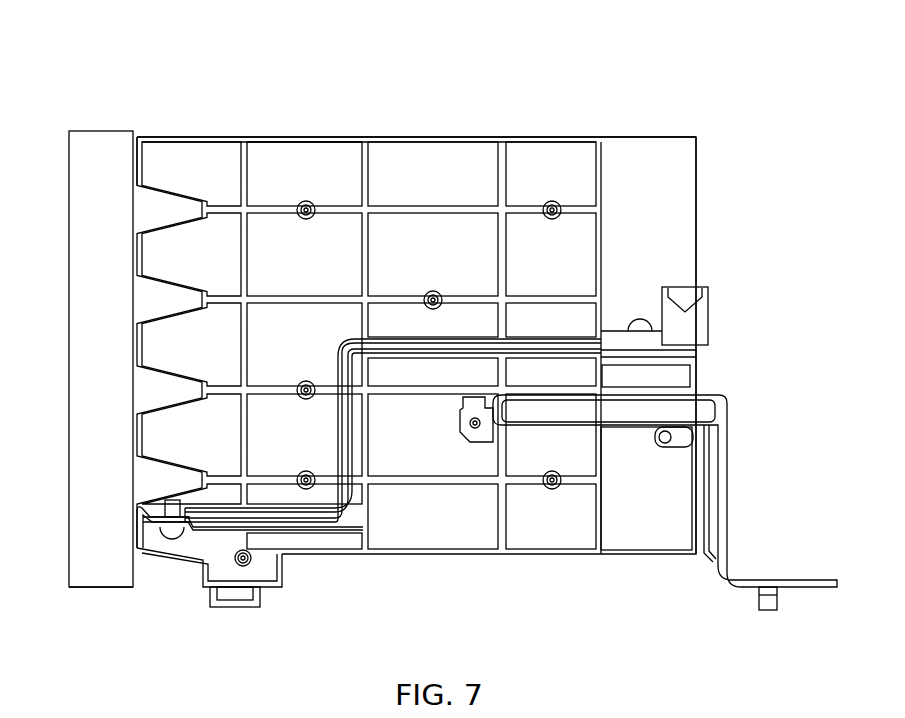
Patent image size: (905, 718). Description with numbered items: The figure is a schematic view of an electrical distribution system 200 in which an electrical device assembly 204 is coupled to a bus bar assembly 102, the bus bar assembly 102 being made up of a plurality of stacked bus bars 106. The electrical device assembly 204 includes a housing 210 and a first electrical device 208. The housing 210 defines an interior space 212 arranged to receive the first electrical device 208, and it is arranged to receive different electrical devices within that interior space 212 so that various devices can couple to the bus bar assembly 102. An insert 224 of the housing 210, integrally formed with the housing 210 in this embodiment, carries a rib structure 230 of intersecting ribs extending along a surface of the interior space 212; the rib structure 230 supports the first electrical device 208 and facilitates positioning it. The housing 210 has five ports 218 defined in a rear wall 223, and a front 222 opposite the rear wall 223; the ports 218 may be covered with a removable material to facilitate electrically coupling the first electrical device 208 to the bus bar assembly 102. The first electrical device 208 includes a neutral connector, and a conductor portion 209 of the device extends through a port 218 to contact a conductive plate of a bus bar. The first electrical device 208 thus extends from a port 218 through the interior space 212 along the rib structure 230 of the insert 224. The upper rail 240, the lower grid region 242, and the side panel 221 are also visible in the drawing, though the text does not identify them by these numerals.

The electrical distribution system 200 is at (660, 50).
The bus bar assembly 102 is at (94, 138).
The stacked bus bars 106 is at (106, 588).
The rear wall 223 is at (138, 142).
The ports 218 is at (137, 177).
The housing 210 is at (290, 128).
The top rail 240 is at (327, 137).
The insert 224 is at (369, 185).
The lower grid panel 242 is at (410, 483).
The interior space 212 is at (588, 148).
The side panel 221 is at (668, 173).
The front 222 is at (698, 238).
The first electrical device 208 is at (710, 312).
The conductor portion 209 is at (147, 545).
The rib structure 230 is at (243, 460).
The electrical device assembly 204 is at (583, 578).